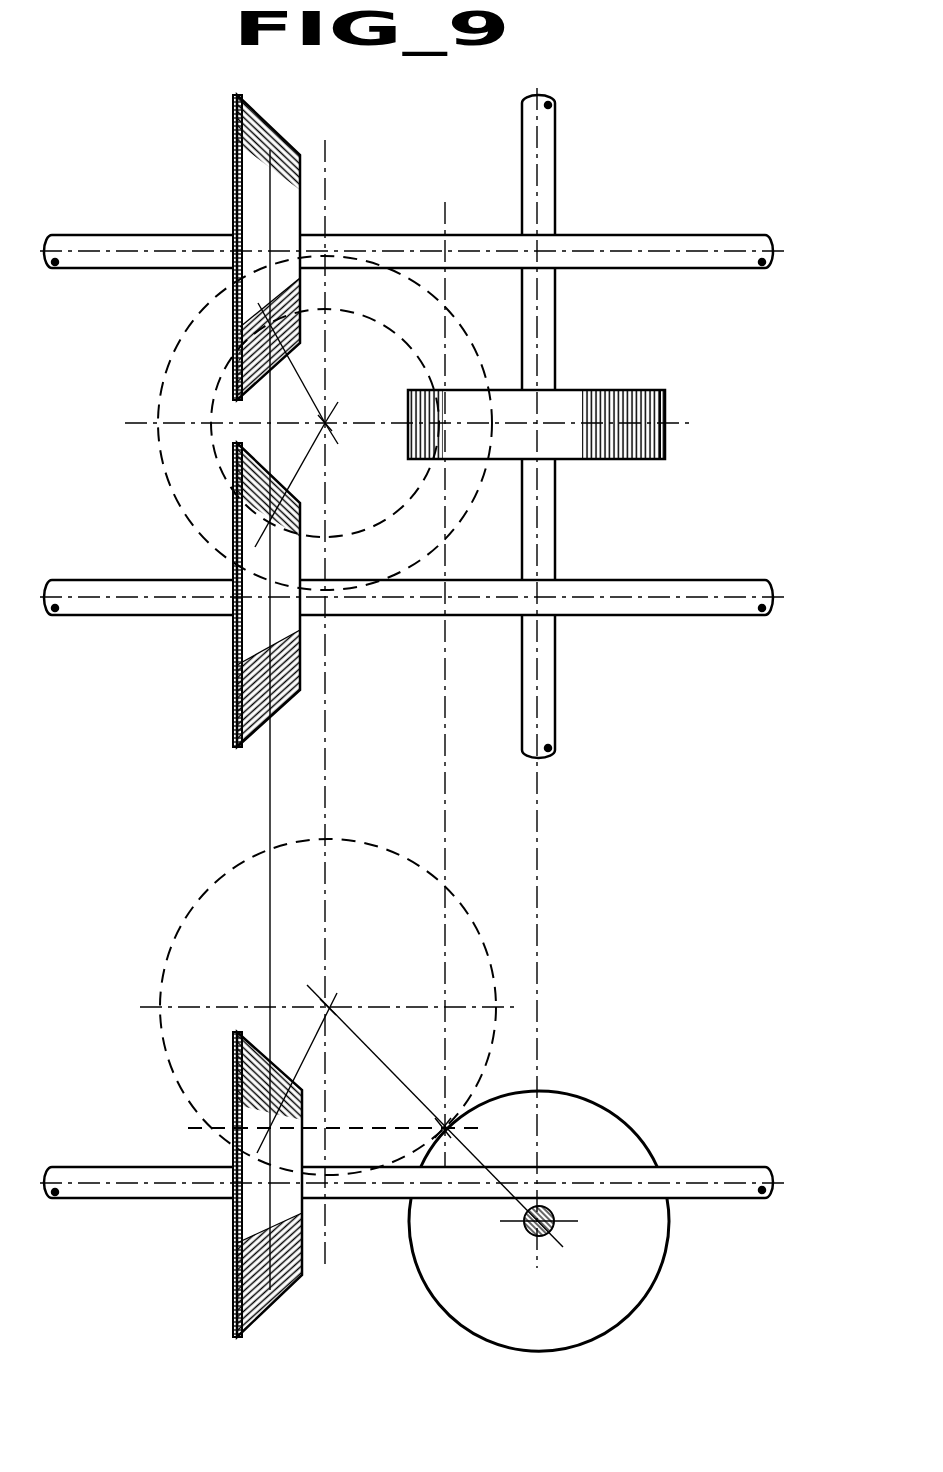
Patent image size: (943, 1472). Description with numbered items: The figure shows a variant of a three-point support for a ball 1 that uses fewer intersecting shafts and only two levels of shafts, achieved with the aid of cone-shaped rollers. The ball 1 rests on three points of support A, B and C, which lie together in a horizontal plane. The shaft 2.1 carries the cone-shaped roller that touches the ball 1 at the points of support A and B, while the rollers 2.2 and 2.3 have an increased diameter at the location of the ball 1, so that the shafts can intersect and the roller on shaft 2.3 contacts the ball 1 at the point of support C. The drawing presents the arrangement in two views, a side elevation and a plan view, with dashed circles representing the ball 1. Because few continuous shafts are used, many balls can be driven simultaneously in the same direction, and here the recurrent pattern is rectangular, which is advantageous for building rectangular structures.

The ball 1 is at (424, 574).
The shaft 2.1 is at (655, 237).
The roller 2.2 is at (680, 580).
The roller 2.3 is at (553, 686).
The point of support A is at (298, 338).
The point of support B is at (300, 503).
The point of support C is at (442, 422).